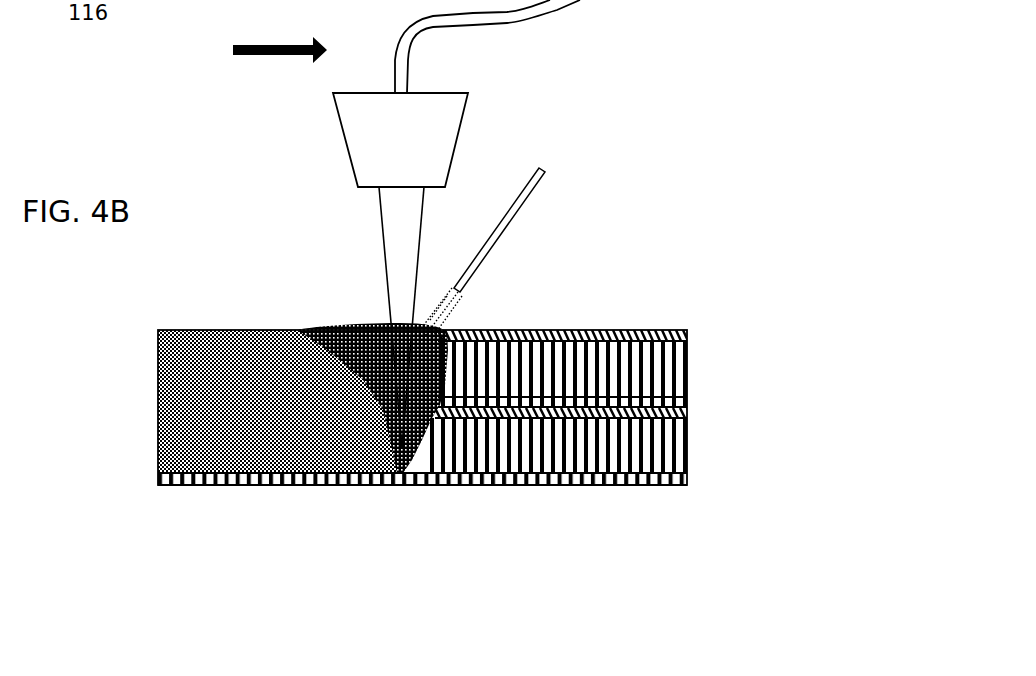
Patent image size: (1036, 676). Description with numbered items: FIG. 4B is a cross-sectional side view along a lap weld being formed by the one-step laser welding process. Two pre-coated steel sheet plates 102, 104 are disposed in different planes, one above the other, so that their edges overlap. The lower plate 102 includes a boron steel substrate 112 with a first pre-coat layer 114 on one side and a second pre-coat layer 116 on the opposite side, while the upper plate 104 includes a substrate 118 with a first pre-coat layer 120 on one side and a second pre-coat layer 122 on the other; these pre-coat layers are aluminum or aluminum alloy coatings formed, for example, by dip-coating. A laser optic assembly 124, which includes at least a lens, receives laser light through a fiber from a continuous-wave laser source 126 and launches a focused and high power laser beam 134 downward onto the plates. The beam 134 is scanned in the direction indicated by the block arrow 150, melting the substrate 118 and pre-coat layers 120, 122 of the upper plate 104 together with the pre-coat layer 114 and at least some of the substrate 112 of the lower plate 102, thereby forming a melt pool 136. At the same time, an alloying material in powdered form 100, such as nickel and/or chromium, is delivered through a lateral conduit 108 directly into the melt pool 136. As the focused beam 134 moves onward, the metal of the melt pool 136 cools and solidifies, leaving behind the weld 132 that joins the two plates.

The alloying material in powdered form 100 is at (524, 304).
The pre-coated steel sheet plate 102 is at (422, 525).
The pre-coated steel sheet plate 104 is at (441, 348).
The lateral conduit 108 is at (576, 230).
The substrate 112 is at (627, 447).
The first pre-coat layer 114 is at (630, 421).
The second pre-coat layer 116 is at (493, 497).
The substrate 118 is at (627, 369).
The first pre-coat layer 120 is at (626, 324).
The second pre-coat layer 122 is at (627, 390).
The laser optic assembly 124 is at (471, 140).
The laser source 126 is at (535, 56).
The weld 132 is at (245, 372).
The focused and high power laser beam 134 is at (350, 316).
The melt pool 136 is at (358, 356).
The arrow 150 is at (251, 102).